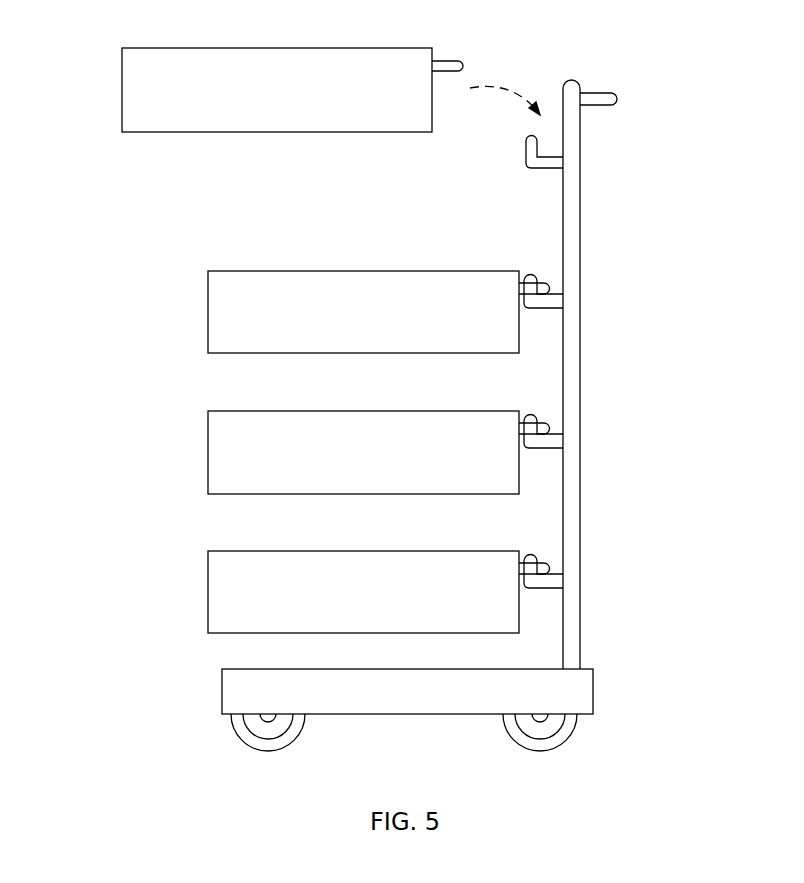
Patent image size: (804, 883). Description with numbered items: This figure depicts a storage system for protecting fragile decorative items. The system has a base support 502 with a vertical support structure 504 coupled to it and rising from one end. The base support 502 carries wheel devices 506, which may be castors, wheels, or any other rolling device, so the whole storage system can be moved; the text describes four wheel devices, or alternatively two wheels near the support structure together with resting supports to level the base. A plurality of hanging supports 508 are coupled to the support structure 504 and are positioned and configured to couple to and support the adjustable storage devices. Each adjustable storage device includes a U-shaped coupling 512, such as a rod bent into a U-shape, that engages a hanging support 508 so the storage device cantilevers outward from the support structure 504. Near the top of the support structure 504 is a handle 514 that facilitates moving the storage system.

The base support 502 is at (593, 690).
The support structure 504 is at (580, 508).
The wheel devices 506 is at (270, 752).
The hanging supports 508 is at (530, 168).
The U-shaped coupling 512 is at (463, 62).
The handle 514 is at (617, 99).